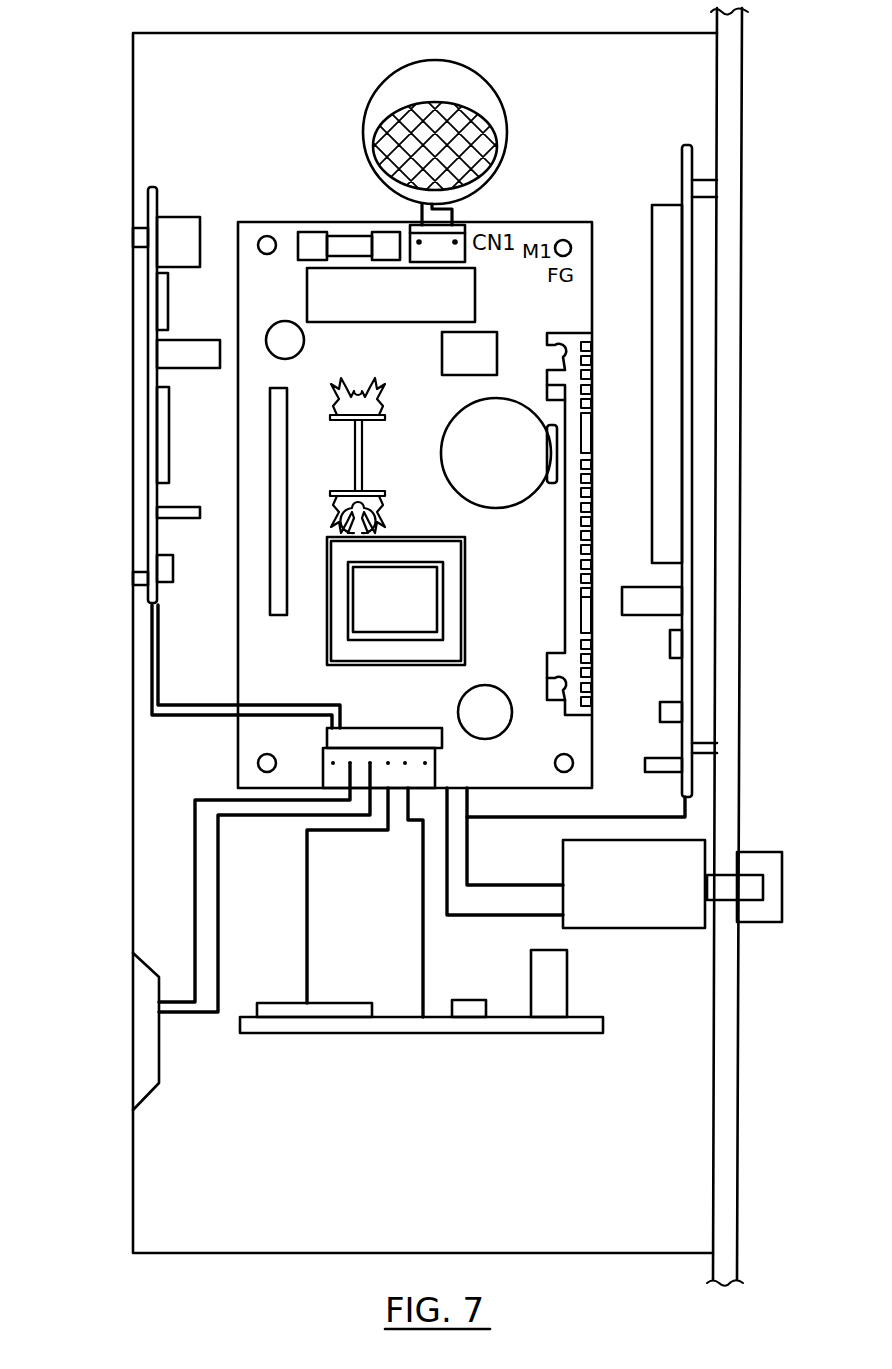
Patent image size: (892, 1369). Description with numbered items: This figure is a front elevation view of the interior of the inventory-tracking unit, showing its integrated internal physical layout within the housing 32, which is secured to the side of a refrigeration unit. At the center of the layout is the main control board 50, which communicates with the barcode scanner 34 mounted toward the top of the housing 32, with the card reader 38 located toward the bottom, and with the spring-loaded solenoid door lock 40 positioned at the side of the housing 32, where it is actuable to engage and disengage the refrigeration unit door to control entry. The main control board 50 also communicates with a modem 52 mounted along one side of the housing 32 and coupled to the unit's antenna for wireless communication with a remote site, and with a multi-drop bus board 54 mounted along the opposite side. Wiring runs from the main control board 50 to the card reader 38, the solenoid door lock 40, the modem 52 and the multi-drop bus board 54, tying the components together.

The housing 32 is at (120, 494).
The barcode scanner 34 is at (362, 122).
The card reader 38 is at (297, 1035).
The solenoid door lock 40 is at (771, 923).
The main control board 50 is at (402, 680).
The modem 52 is at (650, 238).
The multi-drop bus (MDB) board 54 is at (150, 187).